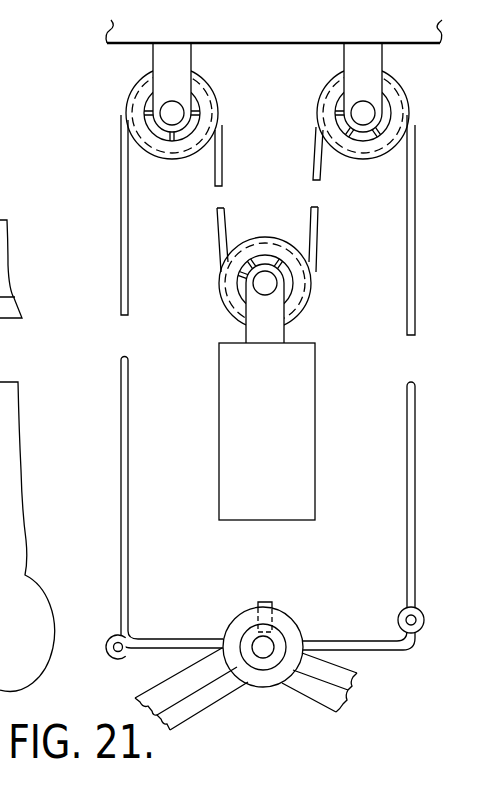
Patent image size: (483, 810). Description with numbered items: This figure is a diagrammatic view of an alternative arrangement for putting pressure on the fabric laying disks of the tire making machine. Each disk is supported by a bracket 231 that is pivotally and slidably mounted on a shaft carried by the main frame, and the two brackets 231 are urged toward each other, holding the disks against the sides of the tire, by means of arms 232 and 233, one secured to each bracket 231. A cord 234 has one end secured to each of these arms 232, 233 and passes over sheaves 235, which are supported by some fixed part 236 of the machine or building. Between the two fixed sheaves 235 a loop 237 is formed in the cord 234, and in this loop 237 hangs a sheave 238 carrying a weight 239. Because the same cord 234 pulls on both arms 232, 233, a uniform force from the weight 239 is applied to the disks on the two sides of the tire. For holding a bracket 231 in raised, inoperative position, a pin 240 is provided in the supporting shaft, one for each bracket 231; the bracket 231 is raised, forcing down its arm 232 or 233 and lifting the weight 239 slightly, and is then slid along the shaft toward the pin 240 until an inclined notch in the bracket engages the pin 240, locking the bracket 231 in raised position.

The bracket 231 is at (352, 693).
The arm 232 is at (194, 621).
The arm 233 is at (364, 620).
The cord 234 is at (125, 455).
The sheaves 235 is at (137, 115).
The fixed part 236 is at (106, 38).
The loop 237 is at (218, 233).
The sheave 238 is at (237, 305).
The weight 239 is at (267, 431).
The pin 240 is at (278, 581).